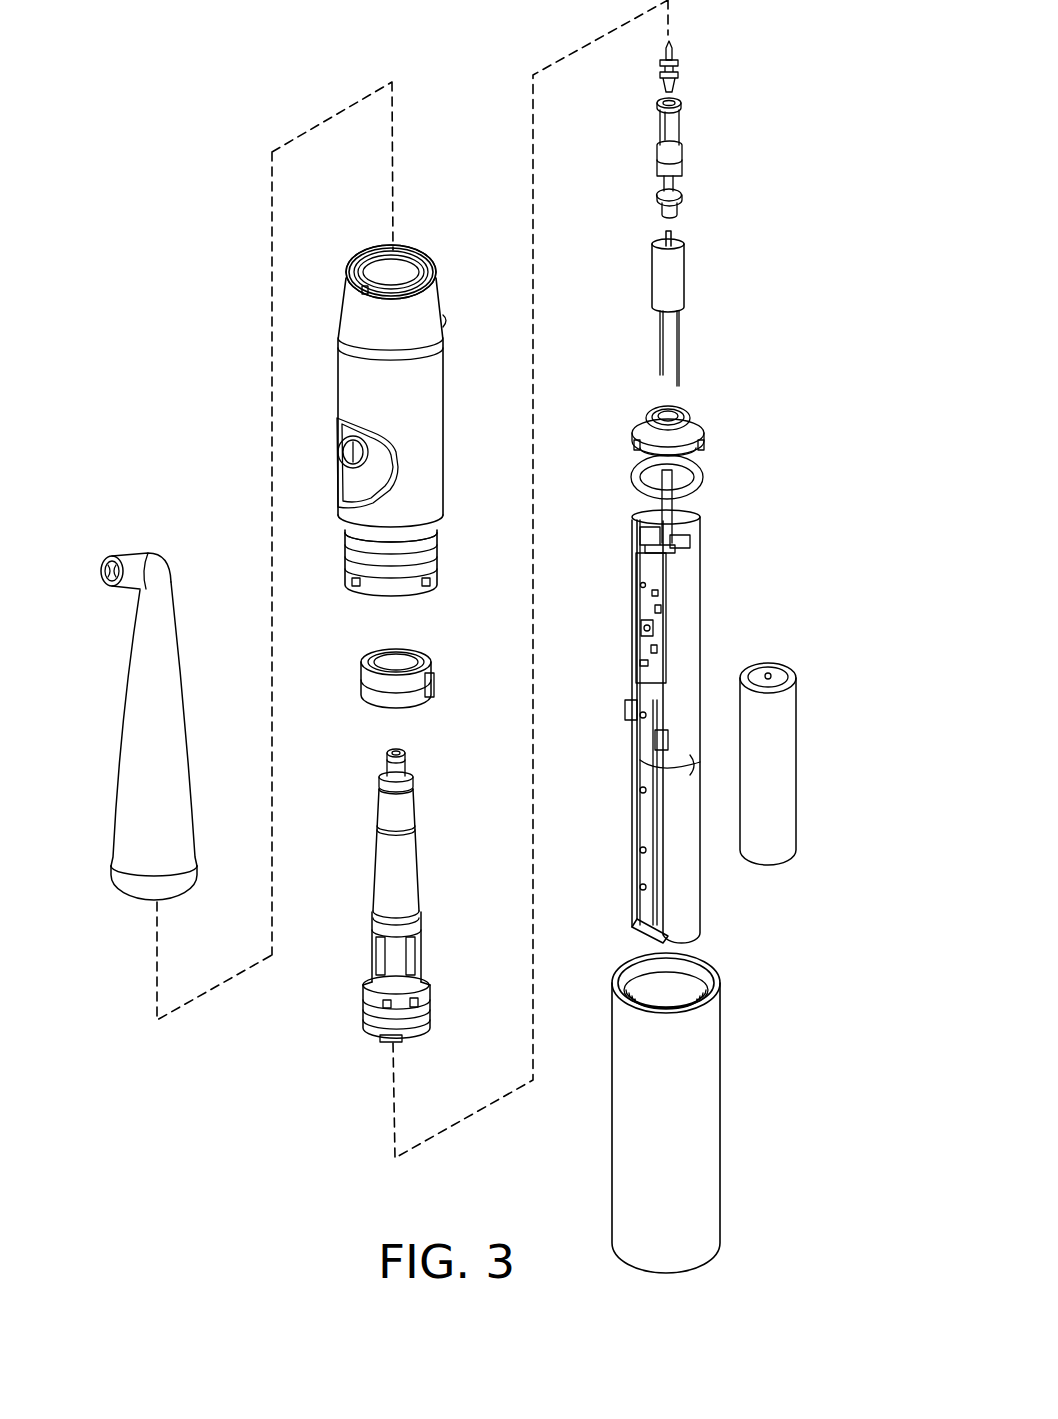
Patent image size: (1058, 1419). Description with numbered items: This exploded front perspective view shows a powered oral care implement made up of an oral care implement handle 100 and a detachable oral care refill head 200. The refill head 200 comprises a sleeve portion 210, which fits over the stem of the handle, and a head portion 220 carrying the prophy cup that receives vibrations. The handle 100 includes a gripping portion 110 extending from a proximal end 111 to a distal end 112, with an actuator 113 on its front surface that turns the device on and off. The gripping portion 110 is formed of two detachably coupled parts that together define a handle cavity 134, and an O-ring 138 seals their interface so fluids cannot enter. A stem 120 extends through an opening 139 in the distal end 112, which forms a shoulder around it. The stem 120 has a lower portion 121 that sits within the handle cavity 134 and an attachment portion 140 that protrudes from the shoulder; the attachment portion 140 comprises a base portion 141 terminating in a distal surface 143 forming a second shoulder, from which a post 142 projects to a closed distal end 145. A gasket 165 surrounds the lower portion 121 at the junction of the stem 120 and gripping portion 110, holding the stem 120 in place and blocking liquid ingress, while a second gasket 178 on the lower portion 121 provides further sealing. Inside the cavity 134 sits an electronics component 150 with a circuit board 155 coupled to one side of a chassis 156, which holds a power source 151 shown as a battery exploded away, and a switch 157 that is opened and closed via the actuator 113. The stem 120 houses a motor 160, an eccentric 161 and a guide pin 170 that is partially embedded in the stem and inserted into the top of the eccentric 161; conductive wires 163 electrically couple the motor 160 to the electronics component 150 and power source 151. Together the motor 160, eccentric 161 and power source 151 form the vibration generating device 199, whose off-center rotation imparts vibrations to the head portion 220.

The oral care implement handle 100 is at (808, 556).
The gripping portion 110 is at (417, 420).
The proximal end 111 is at (670, 1273).
The distal end 112 is at (427, 268).
The actuator 113 is at (343, 448).
The stem 120 is at (402, 874).
The lower portion 121 is at (364, 1009).
The handle cavity 134 is at (384, 278).
The O-ring 138 is at (700, 478).
The opening 139 is at (402, 272).
The attachment portion 140 is at (389, 898).
The base portion 141 is at (389, 855).
The post 142 is at (400, 770).
The distal surface 143 is at (382, 778).
The closed distal end 145 is at (399, 752).
The electronics component 150 is at (711, 706).
The power source 151 is at (765, 756).
The circuit board 155 is at (640, 570).
The chassis 156 is at (680, 882).
The switch 157 is at (631, 629).
The motor 160 is at (644, 321).
The eccentric 161 is at (673, 131).
The conductive wires 163 is at (676, 385).
The gasket 165 is at (432, 673).
The guide pin 170 is at (677, 77).
The second gasket 178 is at (639, 442).
The vibration generating device 199 is at (644, 234).
The oral care refill head 200 is at (114, 696).
The sleeve portion 210 is at (158, 714).
The head portion 220 is at (165, 540).